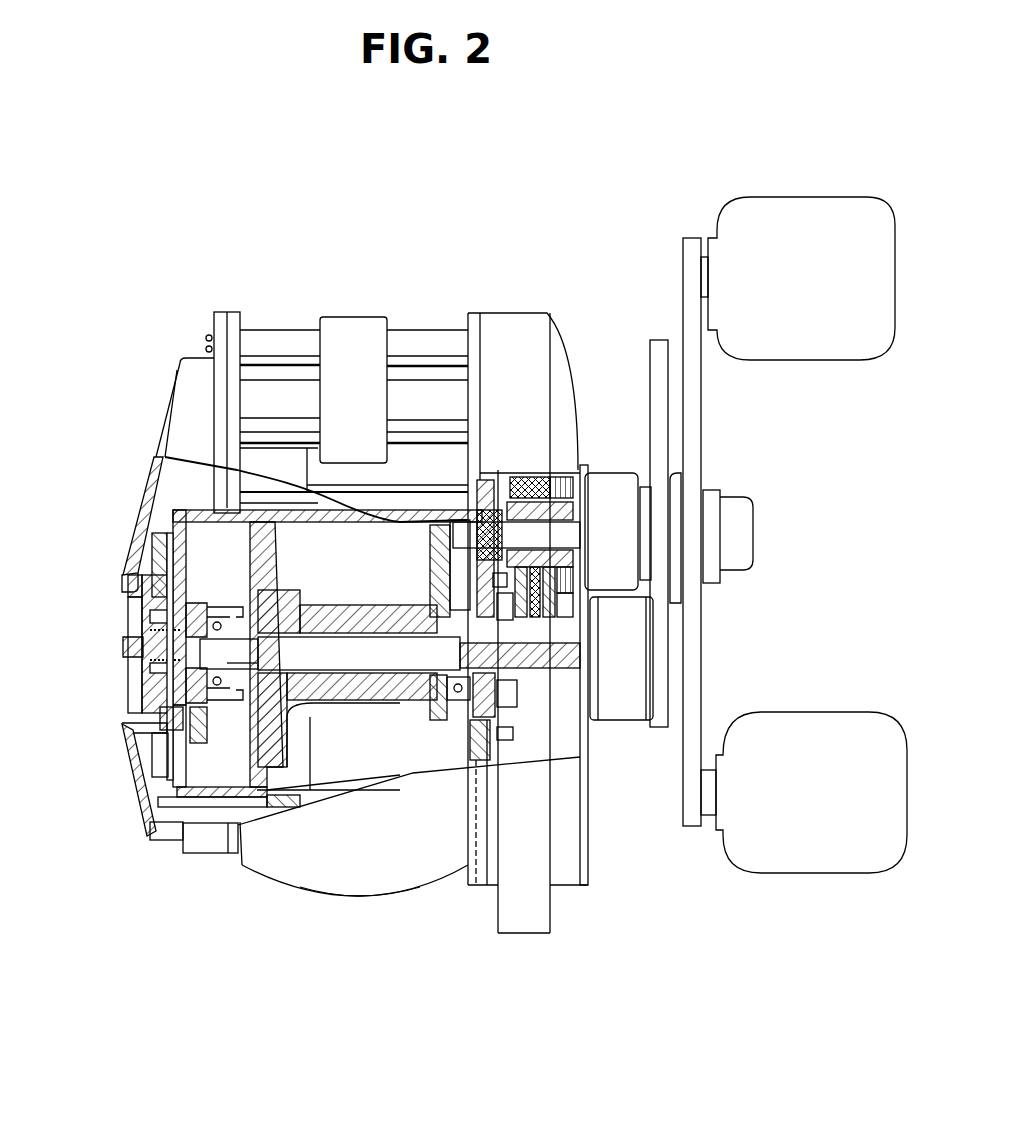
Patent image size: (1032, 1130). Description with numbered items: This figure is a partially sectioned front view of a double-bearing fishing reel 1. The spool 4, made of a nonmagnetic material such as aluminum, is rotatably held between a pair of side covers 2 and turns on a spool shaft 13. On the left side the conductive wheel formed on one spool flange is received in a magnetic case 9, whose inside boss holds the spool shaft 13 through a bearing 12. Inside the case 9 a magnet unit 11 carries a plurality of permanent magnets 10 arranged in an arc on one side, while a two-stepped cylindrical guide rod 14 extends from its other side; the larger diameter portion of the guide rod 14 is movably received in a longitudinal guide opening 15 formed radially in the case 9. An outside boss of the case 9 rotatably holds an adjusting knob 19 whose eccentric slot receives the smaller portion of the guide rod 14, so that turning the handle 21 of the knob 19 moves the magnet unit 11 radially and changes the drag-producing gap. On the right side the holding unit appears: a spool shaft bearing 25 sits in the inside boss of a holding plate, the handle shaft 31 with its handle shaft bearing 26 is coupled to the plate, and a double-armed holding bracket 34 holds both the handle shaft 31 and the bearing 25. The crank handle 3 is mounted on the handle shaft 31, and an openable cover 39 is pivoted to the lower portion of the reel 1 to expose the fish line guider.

The reel 1 is at (197, 218).
The side covers 2 is at (148, 517).
The handle 3 is at (681, 236).
The spool 4 is at (355, 717).
The magnetic case 9 is at (166, 520).
The permanent magnets 10 is at (172, 768).
The magnet unit 11 is at (192, 775).
The bearing 12 is at (150, 584).
The spool shaft 13 is at (413, 658).
The guide rod 14 is at (170, 720).
The guide opening 15 is at (167, 778).
The adjusting knob 19 is at (124, 688).
The handle 21 is at (126, 648).
The spool shaft bearing 25 is at (520, 720).
The handle shaft bearing 26 is at (407, 514).
The handle shaft 31 is at (557, 533).
The holding bracket 34 is at (430, 533).
The openable cover 39 is at (280, 877).